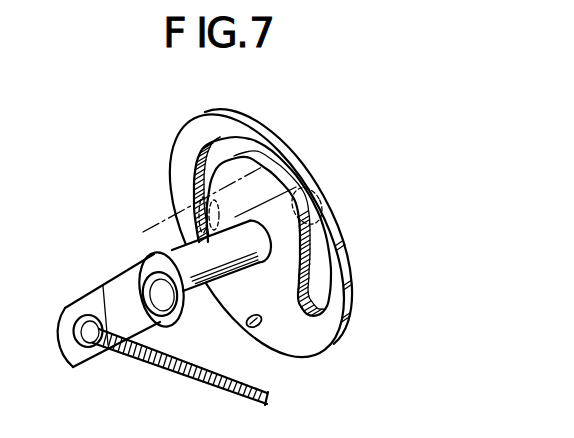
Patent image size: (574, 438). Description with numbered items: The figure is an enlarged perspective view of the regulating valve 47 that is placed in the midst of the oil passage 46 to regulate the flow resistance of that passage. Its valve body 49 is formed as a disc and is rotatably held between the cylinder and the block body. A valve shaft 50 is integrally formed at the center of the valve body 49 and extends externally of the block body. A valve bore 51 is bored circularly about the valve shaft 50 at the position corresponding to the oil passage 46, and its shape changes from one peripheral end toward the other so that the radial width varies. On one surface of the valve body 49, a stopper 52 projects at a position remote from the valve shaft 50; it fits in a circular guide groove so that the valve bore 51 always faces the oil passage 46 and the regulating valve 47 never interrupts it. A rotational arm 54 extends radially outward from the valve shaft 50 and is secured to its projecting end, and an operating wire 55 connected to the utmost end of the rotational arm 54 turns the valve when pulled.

The oil passage 46 is at (163, 226).
The regulating valve 47 is at (188, 109).
The valve body 49 is at (240, 122).
The valve shaft 50 is at (228, 238).
The valve bore 51 is at (200, 183).
The stopper 52 is at (250, 313).
The rotational arm 54 is at (83, 297).
The operating wire 55 is at (193, 377).